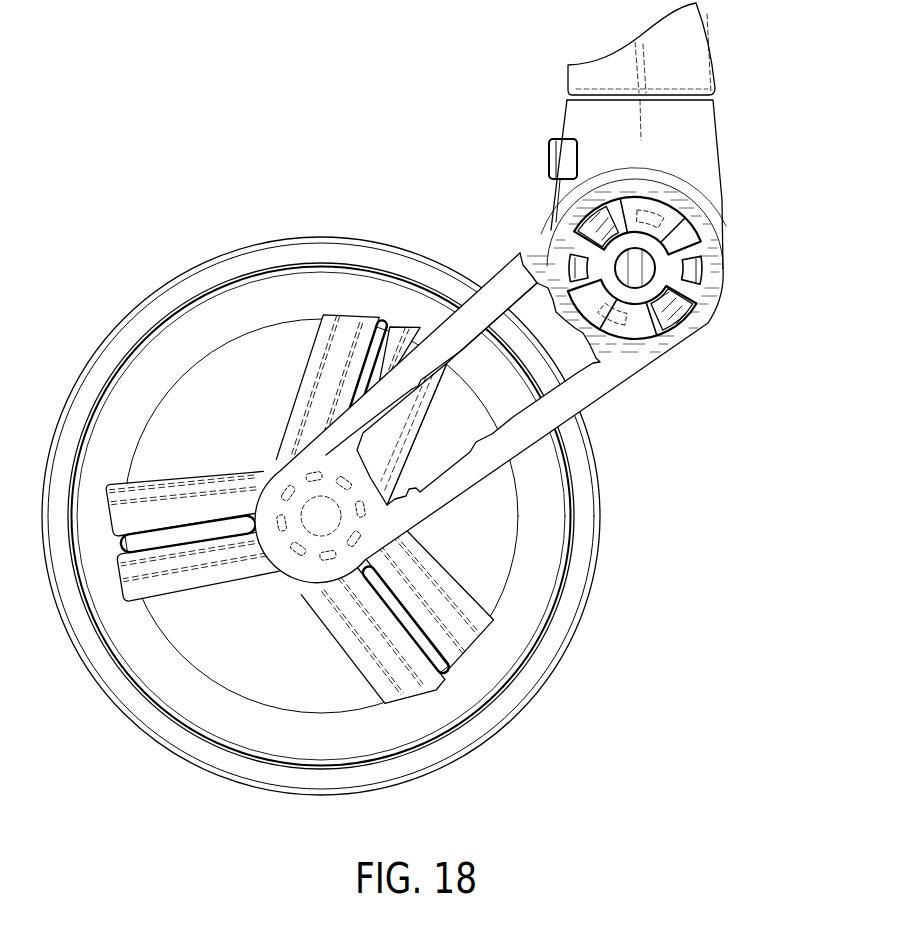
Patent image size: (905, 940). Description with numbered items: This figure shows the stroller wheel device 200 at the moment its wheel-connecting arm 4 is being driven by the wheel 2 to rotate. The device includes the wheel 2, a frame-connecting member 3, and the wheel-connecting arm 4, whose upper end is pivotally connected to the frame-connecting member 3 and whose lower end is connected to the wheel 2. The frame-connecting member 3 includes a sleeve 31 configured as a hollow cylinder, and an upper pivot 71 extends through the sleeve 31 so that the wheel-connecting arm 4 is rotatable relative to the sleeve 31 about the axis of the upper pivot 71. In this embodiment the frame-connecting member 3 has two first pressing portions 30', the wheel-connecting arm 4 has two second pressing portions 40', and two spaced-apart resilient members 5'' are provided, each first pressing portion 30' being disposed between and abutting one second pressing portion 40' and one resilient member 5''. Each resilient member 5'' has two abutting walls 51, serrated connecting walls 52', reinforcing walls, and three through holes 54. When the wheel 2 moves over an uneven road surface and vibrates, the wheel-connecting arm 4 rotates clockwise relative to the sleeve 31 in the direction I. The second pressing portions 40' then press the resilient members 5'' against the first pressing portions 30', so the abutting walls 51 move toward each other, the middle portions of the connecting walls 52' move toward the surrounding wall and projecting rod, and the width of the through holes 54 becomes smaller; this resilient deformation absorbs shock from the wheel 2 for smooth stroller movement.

The wheel 2 is at (385, 718).
The stroller wheel device 200 is at (623, 470).
The frame-connecting member 3 is at (658, 135).
The sleeve 31 is at (697, 163).
The wheel-connecting arm 4 is at (666, 366).
The first pressing portion 30' is at (673, 315).
The second pressing portion 40' is at (623, 258).
The resilient member 5'' is at (624, 268).
The abutting wall 51 is at (628, 205).
The connecting wall 52' is at (676, 317).
The through hole 54 is at (600, 232).
The upper pivot 71 is at (640, 270).
The direction I is at (676, 461).